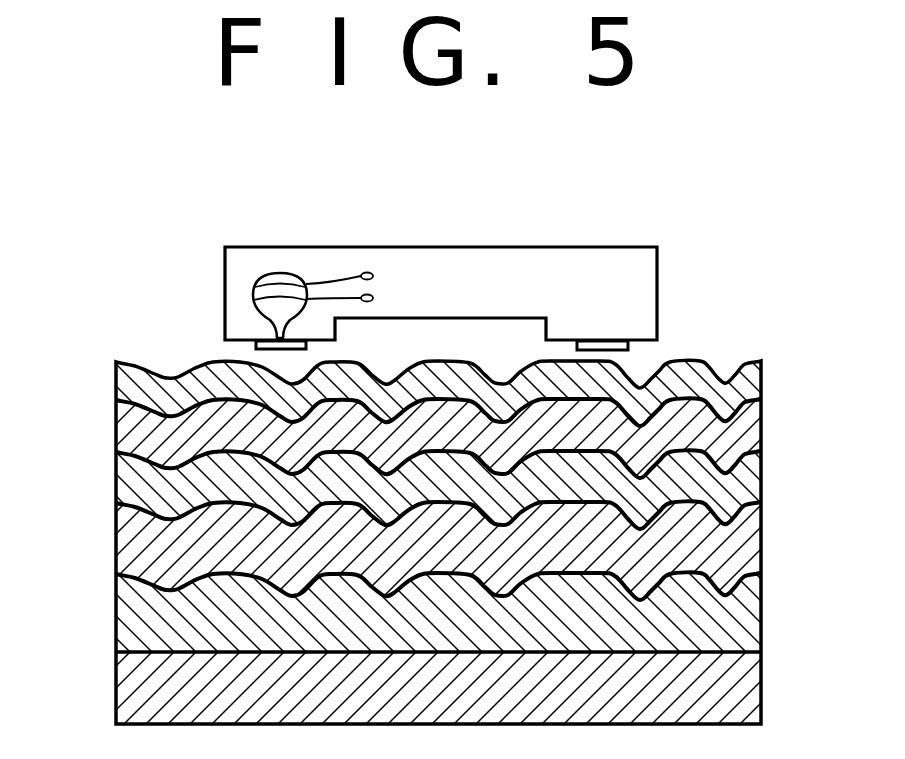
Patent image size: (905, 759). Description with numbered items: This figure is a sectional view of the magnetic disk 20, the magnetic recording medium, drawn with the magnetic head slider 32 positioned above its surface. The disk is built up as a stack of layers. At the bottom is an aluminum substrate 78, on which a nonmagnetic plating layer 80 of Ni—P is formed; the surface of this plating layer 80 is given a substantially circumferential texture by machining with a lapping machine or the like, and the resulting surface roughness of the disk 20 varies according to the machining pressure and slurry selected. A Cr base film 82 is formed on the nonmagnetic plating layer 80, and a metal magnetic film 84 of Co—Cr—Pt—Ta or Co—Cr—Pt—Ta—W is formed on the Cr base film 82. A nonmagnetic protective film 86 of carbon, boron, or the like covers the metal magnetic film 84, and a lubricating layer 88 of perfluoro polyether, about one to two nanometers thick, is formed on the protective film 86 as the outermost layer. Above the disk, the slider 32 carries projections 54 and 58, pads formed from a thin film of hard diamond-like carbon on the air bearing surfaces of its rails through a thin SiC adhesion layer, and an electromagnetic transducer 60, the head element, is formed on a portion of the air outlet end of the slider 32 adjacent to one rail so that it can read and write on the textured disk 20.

The magnetic disk 20 is at (96, 377).
The magnetic head slider 32 is at (493, 247).
The projection 54 is at (256, 345).
The projection 58 is at (603, 345).
The electromagnetic transducer 60 is at (281, 273).
The aluminum substrate 78 is at (759, 683).
The nonmagnetic plating layer 80 is at (757, 617).
The Cr base film 82 is at (755, 546).
The metal magnetic film 84 is at (762, 470).
The nonmagnetic protective film 86 is at (758, 426).
The lubricating layer 88 is at (762, 375).